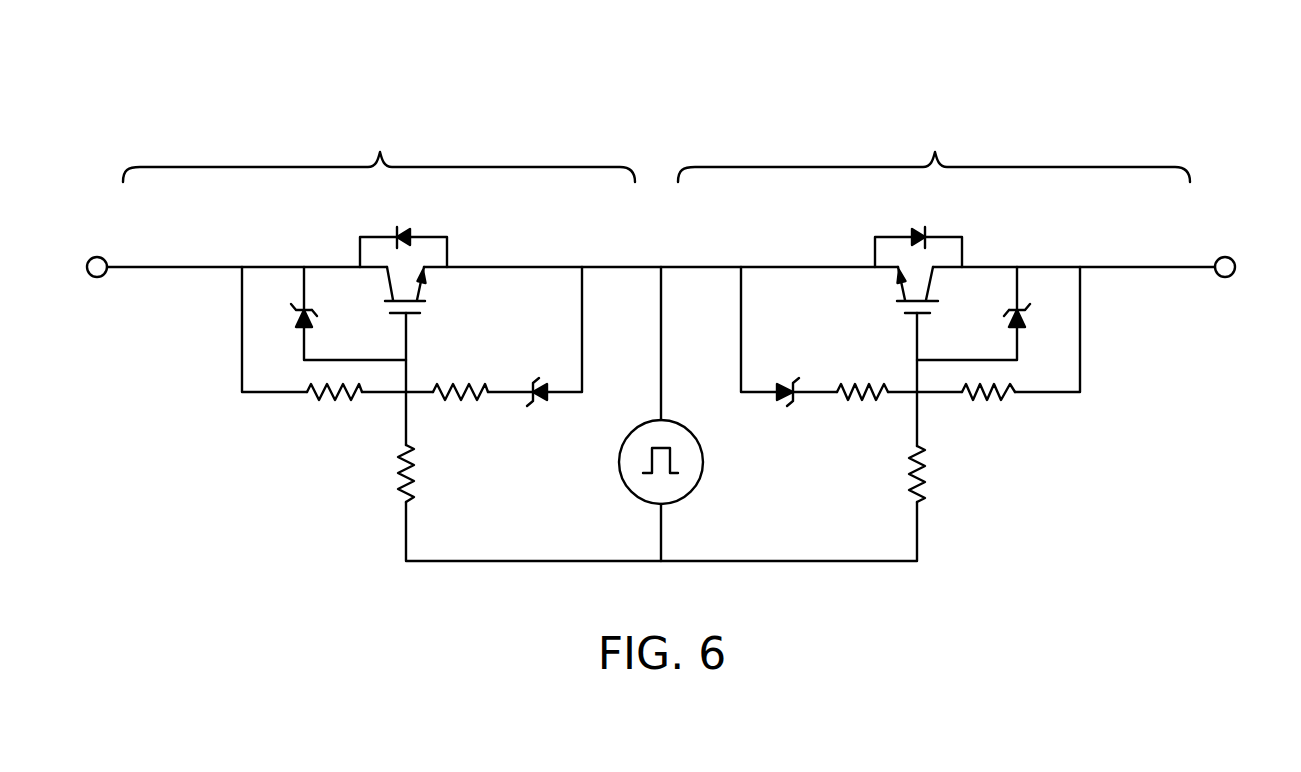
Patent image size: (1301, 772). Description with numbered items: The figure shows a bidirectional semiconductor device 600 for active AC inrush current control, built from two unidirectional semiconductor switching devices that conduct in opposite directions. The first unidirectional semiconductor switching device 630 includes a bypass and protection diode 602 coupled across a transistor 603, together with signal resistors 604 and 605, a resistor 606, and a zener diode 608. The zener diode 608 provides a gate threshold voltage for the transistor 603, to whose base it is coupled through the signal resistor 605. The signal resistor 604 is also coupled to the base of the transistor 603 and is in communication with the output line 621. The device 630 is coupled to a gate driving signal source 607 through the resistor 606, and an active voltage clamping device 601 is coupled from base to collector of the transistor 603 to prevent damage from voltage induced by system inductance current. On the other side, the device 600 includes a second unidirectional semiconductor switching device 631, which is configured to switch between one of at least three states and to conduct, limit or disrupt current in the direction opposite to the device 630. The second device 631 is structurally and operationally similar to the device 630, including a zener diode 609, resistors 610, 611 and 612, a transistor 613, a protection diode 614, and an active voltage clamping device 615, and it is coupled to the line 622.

The bidirectional semiconductor device 600 is at (1213, 118).
The active voltage clamping device 601 is at (298, 332).
The bypass and protection diode 602 is at (403, 228).
The transistor 603 is at (416, 314).
The signal resistor 604 is at (319, 402).
The signal resistor 605 is at (459, 402).
The resistor 606 is at (396, 477).
The gate driving signal source 607 is at (650, 421).
The zener diode 608 is at (530, 404).
The zener diode 609 is at (791, 404).
The resistor 610 is at (860, 402).
The resistor 611 is at (927, 478).
The resistor 612 is at (1003, 402).
The transistor 613 is at (905, 314).
The protection diode 614 is at (911, 228).
The active voltage clamping device 615 is at (1021, 332).
The output line 621 is at (97, 277).
The line 622 is at (1225, 277).
The unidirectional semiconductor switching device 630 is at (379, 151).
The second unidirectional semiconductor switching device 631 is at (934, 151).